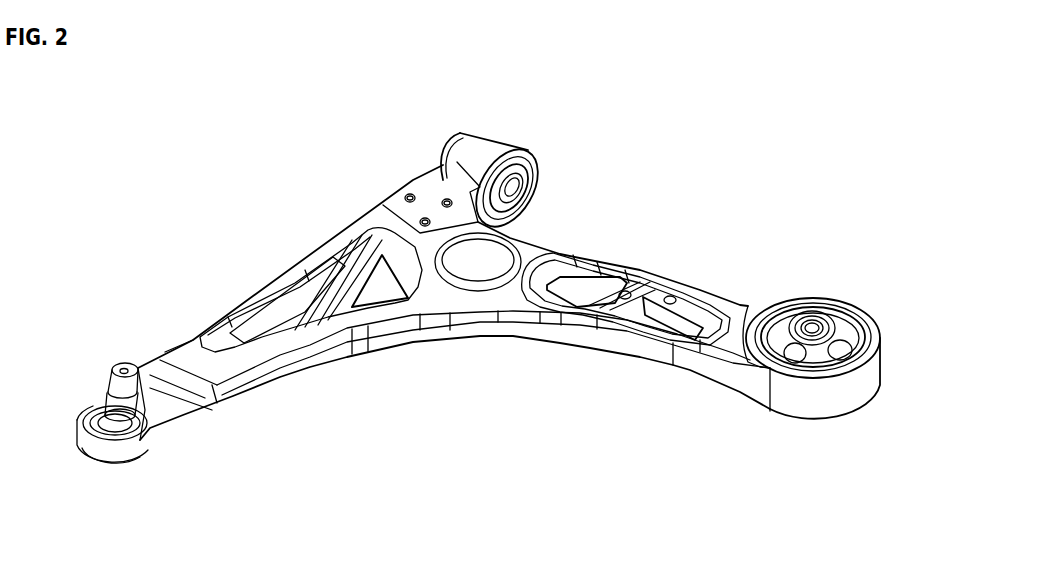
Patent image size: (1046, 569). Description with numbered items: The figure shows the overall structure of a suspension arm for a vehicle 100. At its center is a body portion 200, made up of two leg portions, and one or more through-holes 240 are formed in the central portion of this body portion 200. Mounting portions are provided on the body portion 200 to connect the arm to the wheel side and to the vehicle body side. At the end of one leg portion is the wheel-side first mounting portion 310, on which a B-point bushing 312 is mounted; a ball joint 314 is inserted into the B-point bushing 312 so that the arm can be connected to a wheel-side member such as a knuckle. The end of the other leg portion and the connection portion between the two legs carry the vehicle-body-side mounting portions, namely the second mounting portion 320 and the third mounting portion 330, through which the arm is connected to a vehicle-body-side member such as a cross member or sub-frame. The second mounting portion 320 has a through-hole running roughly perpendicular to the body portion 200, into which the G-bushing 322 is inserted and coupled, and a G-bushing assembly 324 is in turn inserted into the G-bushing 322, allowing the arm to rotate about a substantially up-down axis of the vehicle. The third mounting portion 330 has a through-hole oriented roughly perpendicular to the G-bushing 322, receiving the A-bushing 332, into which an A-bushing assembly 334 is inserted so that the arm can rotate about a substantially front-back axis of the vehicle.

The suspension arm for a vehicle 100 is at (118, 110).
The body portion 200 is at (452, 308).
The through-holes 240 is at (264, 274).
The first mounting portion 310 is at (93, 455).
The B-point bushing 312 is at (95, 403).
The ball joint 314 is at (115, 375).
The second mounting portion 320 is at (862, 393).
The G-bushing 322 is at (867, 323).
The G-bushing assembly 324 is at (843, 312).
The third mounting portion 330 is at (480, 150).
The A-bushing 332 is at (530, 160).
The A-bushing assembly 334 is at (532, 182).